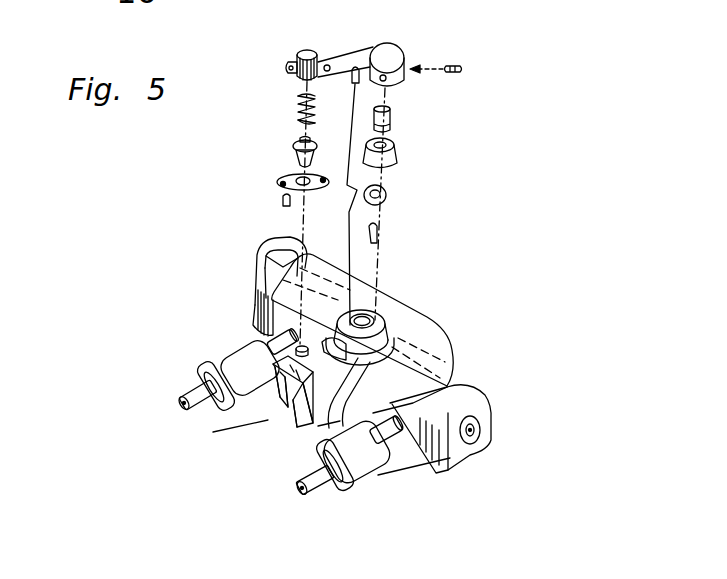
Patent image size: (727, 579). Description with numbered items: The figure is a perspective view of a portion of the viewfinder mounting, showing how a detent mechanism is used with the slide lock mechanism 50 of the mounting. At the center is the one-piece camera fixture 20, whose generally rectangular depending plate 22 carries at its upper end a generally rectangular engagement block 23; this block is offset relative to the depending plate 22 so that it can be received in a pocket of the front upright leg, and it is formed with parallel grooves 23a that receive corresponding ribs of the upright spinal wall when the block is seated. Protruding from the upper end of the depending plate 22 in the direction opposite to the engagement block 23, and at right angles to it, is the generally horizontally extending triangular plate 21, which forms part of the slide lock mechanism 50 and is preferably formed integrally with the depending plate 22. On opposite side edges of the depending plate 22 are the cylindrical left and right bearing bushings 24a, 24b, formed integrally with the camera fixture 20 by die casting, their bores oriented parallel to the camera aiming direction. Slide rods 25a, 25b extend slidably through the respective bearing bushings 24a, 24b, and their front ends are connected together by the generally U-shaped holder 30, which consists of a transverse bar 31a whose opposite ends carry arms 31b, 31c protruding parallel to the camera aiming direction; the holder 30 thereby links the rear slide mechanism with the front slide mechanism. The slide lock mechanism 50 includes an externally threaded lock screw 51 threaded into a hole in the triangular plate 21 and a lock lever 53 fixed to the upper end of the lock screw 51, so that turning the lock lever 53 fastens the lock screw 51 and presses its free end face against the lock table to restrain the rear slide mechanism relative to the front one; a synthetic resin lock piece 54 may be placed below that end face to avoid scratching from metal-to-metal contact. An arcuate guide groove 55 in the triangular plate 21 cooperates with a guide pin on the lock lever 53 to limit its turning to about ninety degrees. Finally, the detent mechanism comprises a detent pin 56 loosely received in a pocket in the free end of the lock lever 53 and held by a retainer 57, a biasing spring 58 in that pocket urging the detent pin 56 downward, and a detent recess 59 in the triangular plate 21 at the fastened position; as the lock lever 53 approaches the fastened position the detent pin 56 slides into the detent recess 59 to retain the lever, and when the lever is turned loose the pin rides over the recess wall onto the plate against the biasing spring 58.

The camera fixture 20 is at (175, 21).
The triangular plate 21 is at (405, 345).
The depending plate 22 is at (242, 7).
The engagement block 23 is at (283, 420).
The parallel grooves 23a is at (280, 403).
The left bearing bushing 24a is at (217, 360).
The right bearing bushing 24b is at (363, 482).
The slide rod 25a is at (183, 410).
The slide rod 25b is at (317, 493).
The holder 30 is at (250, 288).
The transverse bar 31a is at (460, 382).
The arm 31b is at (270, 245).
The arm 31c is at (460, 452).
The slide lock mechanism 50 is at (460, 133).
The lock screw 51 is at (392, 113).
The lock lever 53 is at (390, 43).
The lock piece 54 is at (386, 195).
The arcuate guide groove 55 is at (383, 320).
The detent pin 56 is at (293, 147).
The retainer 57 is at (280, 184).
The biasing spring 58 is at (295, 107).
The detent recess 59 is at (290, 350).